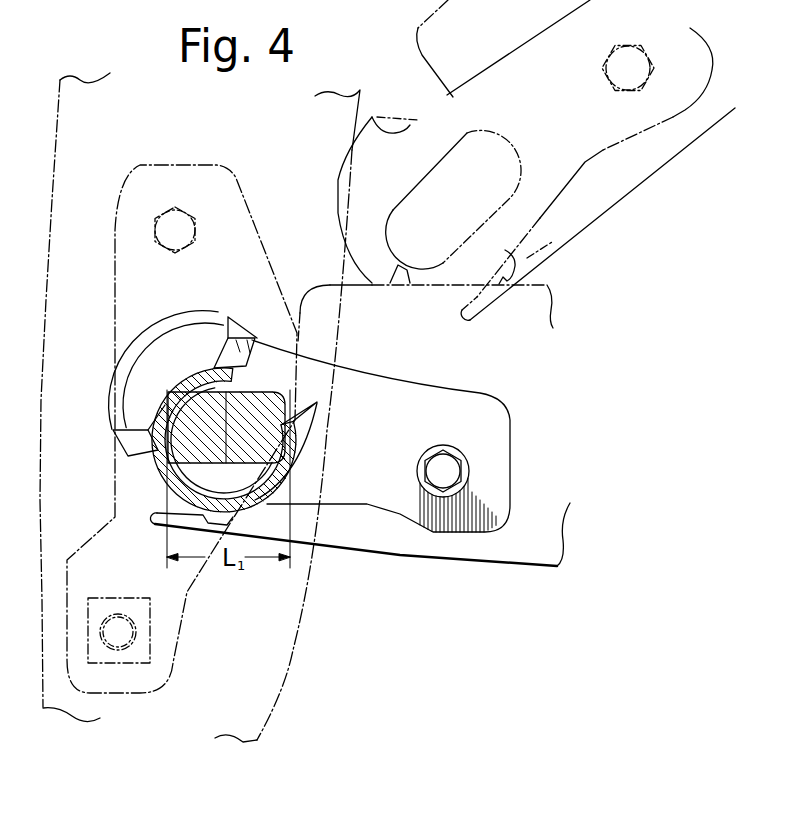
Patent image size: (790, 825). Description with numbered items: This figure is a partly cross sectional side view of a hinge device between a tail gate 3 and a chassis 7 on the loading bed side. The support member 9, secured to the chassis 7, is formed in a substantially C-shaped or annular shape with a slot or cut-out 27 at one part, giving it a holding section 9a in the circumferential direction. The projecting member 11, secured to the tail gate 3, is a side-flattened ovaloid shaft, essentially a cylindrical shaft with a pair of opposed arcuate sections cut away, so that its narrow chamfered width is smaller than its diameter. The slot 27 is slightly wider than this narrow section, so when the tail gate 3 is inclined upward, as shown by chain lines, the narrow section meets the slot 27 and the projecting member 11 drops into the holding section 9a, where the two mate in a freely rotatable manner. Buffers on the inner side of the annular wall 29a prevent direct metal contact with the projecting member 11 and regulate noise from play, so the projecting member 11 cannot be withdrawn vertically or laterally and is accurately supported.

The tail gate 3 is at (472, 556).
The chassis 7 is at (57, 288).
The support member 9 is at (303, 482).
The holding section 9a is at (157, 392).
The projecting member 11 is at (277, 438).
The slot or cut-out 27 is at (288, 371).
The annular wall 29a is at (143, 462).